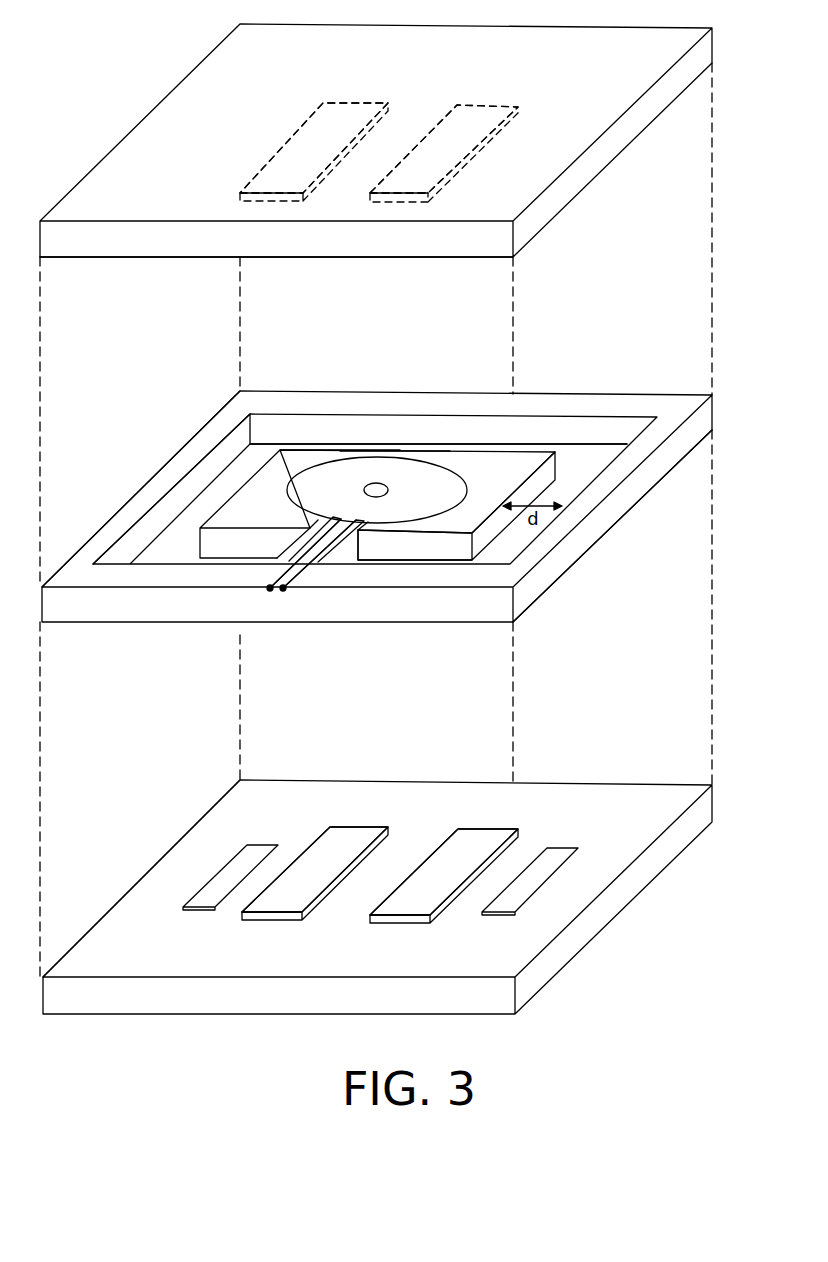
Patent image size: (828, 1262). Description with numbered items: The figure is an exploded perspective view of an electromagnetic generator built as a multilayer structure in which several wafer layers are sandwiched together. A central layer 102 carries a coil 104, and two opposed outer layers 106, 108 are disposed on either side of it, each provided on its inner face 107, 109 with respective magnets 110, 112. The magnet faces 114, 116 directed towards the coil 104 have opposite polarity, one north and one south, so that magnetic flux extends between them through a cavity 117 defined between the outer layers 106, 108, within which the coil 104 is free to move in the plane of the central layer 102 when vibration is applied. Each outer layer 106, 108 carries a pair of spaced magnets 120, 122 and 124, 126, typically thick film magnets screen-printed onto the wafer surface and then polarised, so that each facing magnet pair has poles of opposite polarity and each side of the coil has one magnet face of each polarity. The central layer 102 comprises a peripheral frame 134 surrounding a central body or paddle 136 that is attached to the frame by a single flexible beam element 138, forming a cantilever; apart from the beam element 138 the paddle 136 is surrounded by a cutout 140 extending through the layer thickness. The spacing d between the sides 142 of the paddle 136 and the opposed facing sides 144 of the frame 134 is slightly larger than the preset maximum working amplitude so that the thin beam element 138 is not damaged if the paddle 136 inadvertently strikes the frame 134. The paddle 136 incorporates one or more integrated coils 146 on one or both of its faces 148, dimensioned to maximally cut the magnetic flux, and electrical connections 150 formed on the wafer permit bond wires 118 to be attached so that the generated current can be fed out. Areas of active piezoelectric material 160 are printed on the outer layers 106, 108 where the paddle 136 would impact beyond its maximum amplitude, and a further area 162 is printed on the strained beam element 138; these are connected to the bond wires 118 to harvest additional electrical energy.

The central layer 102 is at (690, 437).
The coil 104 is at (427, 462).
The outer layer 106 is at (593, 170).
The inner face 107 is at (68, 250).
The outer layer 108 is at (658, 855).
The inner face 109 is at (120, 913).
The magnets 110 is at (300, 130).
The magnets 112 is at (322, 843).
The magnet faces 114 is at (275, 200).
The magnet faces 116 is at (345, 825).
The cavity 117 is at (575, 455).
The bond wires 118 is at (270, 588).
The magnet 120 is at (367, 100).
The magnet 122 is at (497, 100).
The magnet 124 is at (267, 922).
The magnet 126 is at (402, 922).
The peripheral frame 134 is at (595, 503).
The central paddle 136 is at (308, 455).
The beam element 138 is at (363, 556).
The cutout 140 is at (173, 540).
The sides of the central paddle 142 is at (543, 477).
The facing sides of the peripheral frame 144 is at (193, 481).
The integrated coil 146 is at (370, 455).
The face of the central paddle 148 is at (452, 525).
The electrical connections 150 is at (270, 588).
The area of active piezoelectric material 160 is at (243, 848).
The area of active piezoelectric material 162 is at (277, 558).